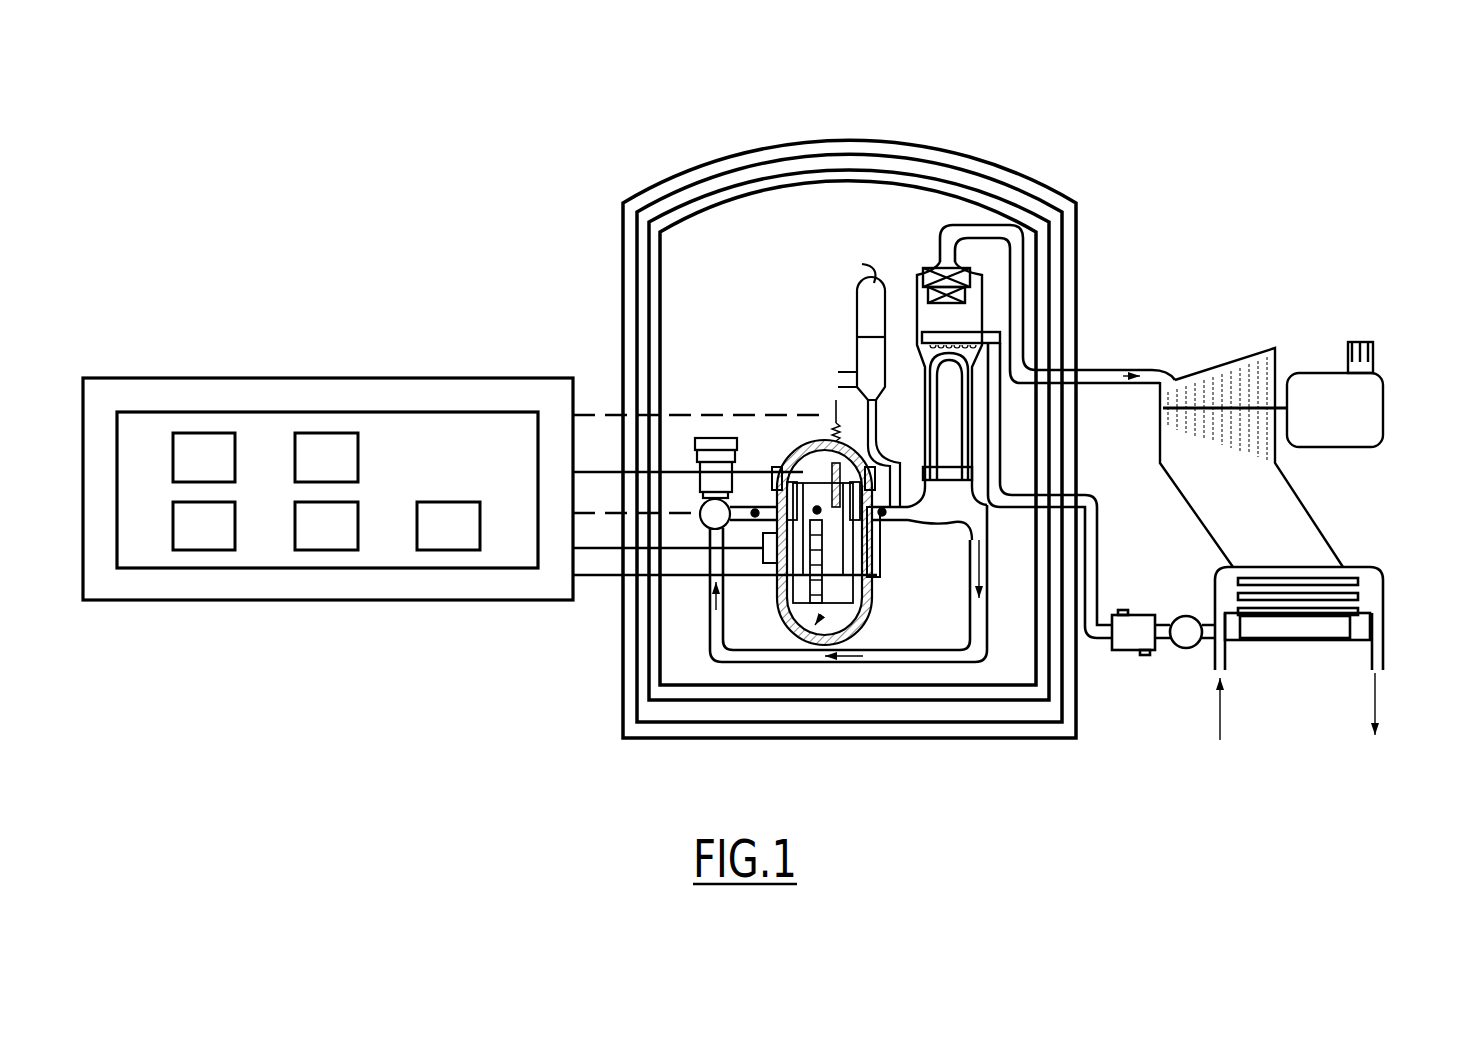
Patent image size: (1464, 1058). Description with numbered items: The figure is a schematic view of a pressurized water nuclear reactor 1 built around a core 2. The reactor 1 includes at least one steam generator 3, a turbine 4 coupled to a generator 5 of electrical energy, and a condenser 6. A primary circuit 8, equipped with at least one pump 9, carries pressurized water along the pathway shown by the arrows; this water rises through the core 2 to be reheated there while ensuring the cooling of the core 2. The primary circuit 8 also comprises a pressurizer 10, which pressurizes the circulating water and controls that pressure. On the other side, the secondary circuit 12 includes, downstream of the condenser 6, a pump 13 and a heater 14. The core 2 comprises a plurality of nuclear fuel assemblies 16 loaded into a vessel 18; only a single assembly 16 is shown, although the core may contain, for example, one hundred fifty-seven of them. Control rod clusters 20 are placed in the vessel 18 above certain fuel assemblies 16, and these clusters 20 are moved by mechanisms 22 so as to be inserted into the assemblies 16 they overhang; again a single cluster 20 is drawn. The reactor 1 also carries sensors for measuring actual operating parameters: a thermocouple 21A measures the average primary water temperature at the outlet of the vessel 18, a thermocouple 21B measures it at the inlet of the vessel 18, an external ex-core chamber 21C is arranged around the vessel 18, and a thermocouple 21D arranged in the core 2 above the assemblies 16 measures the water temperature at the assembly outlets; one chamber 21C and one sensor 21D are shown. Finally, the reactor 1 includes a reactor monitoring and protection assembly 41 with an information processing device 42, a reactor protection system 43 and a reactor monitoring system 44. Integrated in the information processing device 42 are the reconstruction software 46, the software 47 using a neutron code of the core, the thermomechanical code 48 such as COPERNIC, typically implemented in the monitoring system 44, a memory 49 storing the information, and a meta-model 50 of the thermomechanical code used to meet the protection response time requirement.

The nuclear reactor 1 is at (901, 424).
The core 2 is at (816, 554).
The steam generator 3 is at (925, 243).
The turbine 4 is at (1247, 350).
The generator 5 is at (1392, 415).
The condenser 6 is at (1327, 520).
The primary circuit 8 is at (705, 607).
The pump 9 is at (688, 440).
The pressurizer 10 is at (853, 313).
The secondary circuit 12 is at (1128, 362).
The pump 13 is at (1185, 653).
The heater 14 is at (1138, 613).
The nuclear fuel assembly 16 is at (808, 590).
The vessel 18 is at (875, 623).
The control rod cluster 20 is at (847, 477).
The thermocouple 21A is at (886, 512).
The thermocouple 21B is at (755, 509).
The external chamber 21C is at (772, 563).
The thermocouple 21D is at (817, 506).
The mechanism 22 is at (830, 417).
The reactor monitoring and protection assembly 41 is at (328, 473).
The information processing device 42 is at (327, 535).
The reactor protection system 43 is at (328, 455).
The reactor monitoring system 44 is at (150, 378).
The software 46 is at (217, 471).
The software 47 is at (217, 540).
The thermomechanical code 48 is at (339, 471).
The memory 49 is at (339, 540).
The meta-model 50 is at (461, 540).